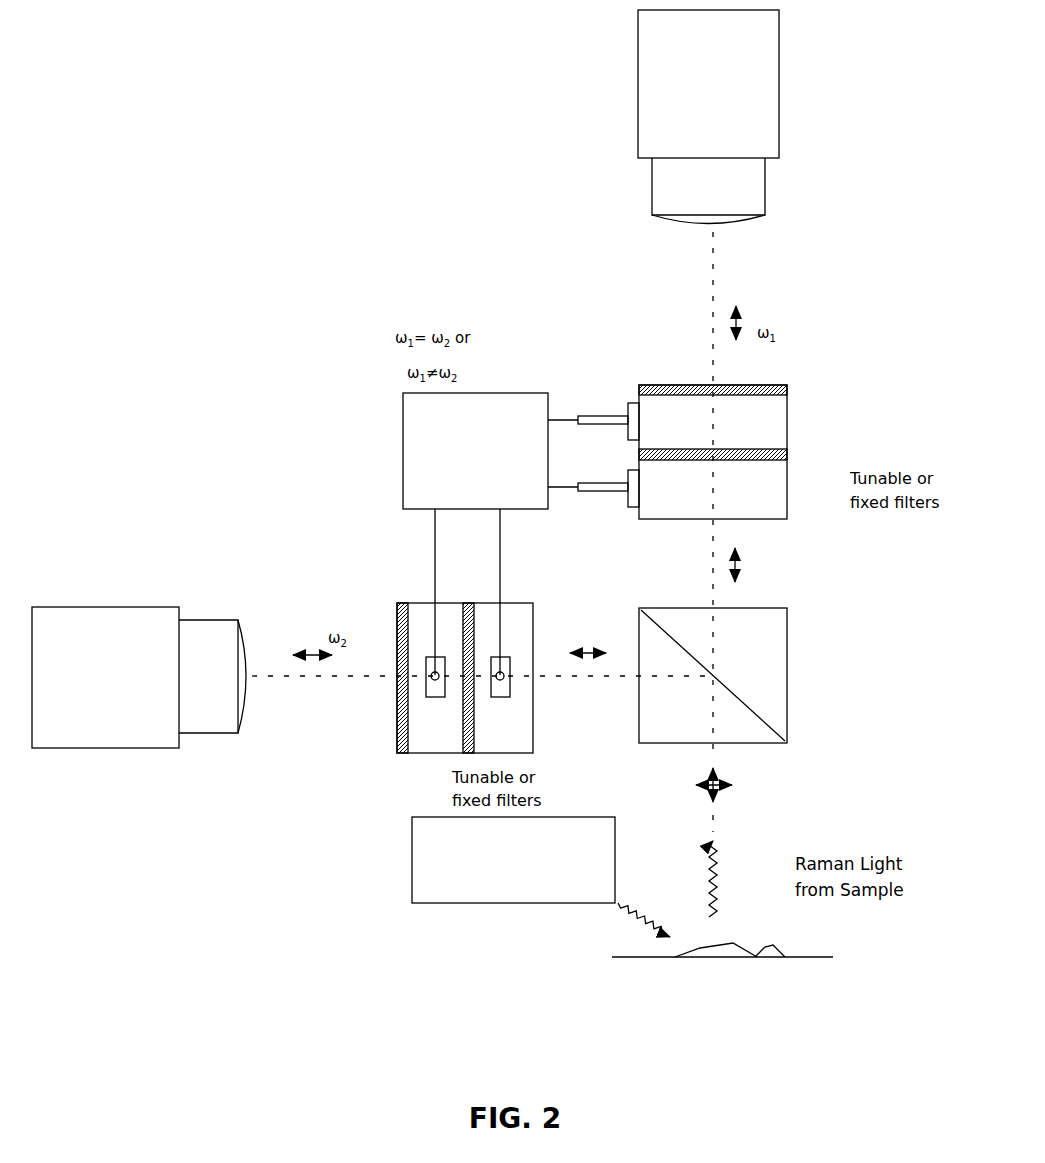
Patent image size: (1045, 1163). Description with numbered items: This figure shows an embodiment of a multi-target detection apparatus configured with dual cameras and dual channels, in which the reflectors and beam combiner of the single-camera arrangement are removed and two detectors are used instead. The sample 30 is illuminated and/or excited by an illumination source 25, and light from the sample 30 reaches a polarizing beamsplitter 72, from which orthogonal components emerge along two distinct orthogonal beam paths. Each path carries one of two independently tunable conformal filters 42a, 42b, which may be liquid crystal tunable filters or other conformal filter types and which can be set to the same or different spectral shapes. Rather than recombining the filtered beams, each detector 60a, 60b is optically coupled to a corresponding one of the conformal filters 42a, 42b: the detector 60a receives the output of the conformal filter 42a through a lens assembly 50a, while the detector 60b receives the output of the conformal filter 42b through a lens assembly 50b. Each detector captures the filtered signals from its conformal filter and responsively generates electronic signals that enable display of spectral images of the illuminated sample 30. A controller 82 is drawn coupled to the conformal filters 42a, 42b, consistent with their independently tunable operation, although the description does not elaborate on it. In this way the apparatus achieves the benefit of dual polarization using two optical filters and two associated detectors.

The detector 60a is at (741, 84).
The lens assembly 50a is at (750, 191).
The conformal filter 42a is at (826, 424).
The controller 82 is at (403, 455).
The conformal filter 42b is at (420, 772).
The polarizing beamsplitter 72 is at (783, 652).
The detector 60b is at (105, 646).
The lens assembly 50b is at (212, 643).
The illumination source 25 is at (460, 901).
The sample 30 is at (738, 951).